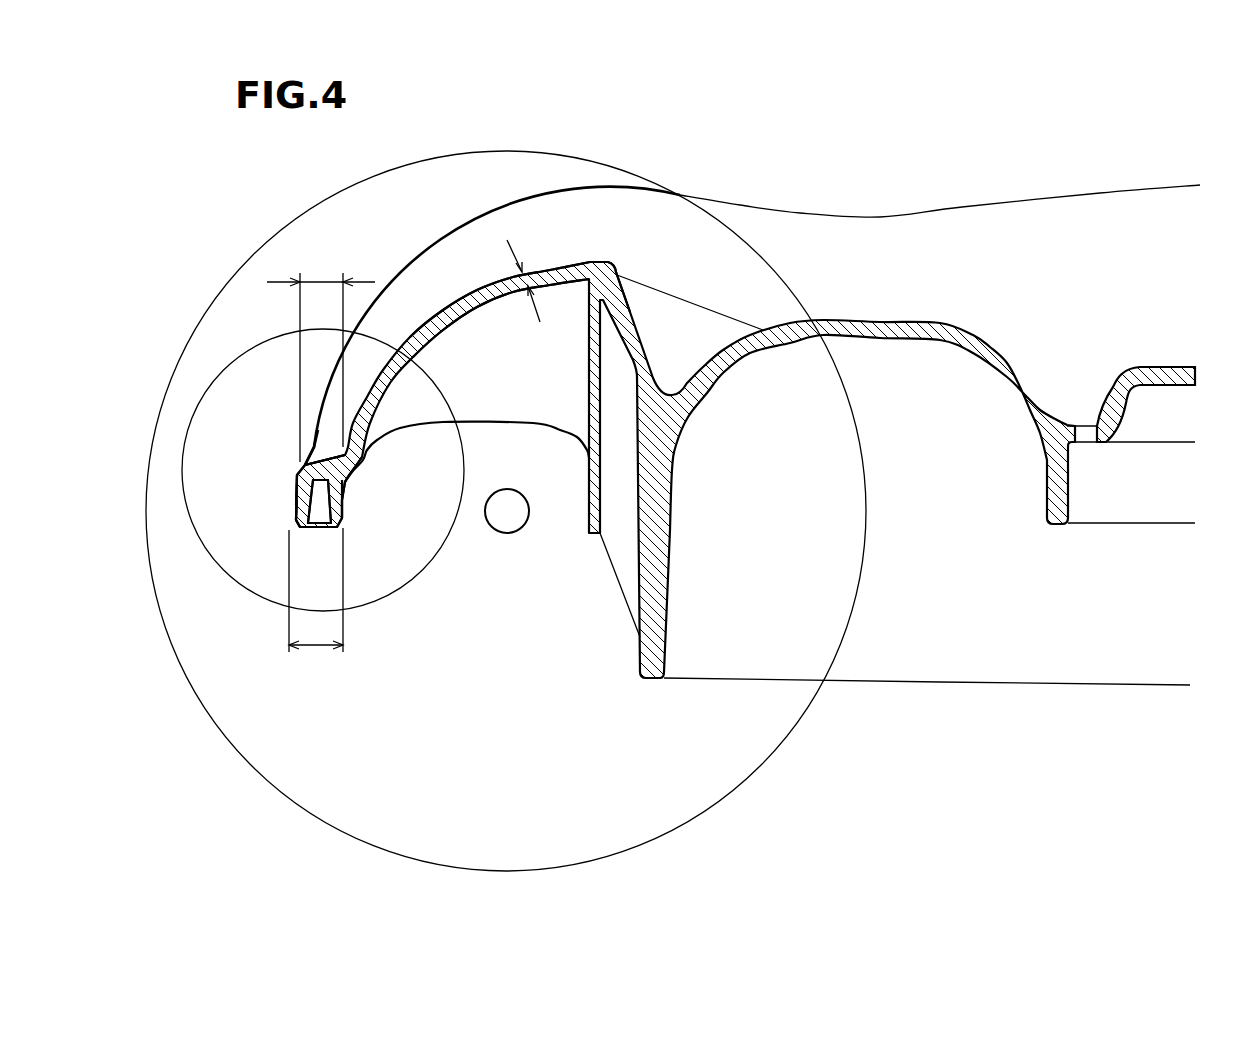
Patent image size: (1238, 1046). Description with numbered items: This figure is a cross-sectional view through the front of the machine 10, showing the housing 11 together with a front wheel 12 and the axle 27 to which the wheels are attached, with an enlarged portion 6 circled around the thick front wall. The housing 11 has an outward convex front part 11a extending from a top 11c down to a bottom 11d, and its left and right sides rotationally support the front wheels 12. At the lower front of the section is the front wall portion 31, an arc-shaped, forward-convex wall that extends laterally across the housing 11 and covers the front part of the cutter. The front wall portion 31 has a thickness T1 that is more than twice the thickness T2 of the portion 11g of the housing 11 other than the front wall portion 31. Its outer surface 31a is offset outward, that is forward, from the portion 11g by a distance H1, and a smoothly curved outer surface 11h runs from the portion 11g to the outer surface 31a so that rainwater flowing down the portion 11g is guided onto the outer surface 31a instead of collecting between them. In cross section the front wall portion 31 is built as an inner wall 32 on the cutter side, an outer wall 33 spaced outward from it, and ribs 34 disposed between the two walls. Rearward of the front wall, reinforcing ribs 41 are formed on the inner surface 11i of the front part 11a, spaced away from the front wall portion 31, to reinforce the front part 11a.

The pneumatic tire 10 is at (712, 359).
The housing 11 is at (962, 207).
The front part 11a is at (480, 288).
The top 11c is at (601, 260).
The bottom 11d is at (287, 513).
The portion other than the front wall portion 11g is at (558, 264).
The curved outer surface 11h is at (335, 437).
The inner surface 11i is at (488, 305).
The front wheel 12 is at (864, 576).
The enlarged portion 6 is at (235, 358).
The axle 27 is at (518, 534).
The front wall portion 31 is at (278, 502).
The outer surface 31a is at (303, 468).
The inner wall 32 is at (342, 493).
The outer wall 33 is at (293, 488).
The ribs 34 is at (318, 522).
The reinforcing ribs 41 is at (535, 416).
The distance H1 is at (320, 282).
The thickness T1 is at (316, 645).
The thickness T2 is at (531, 299).